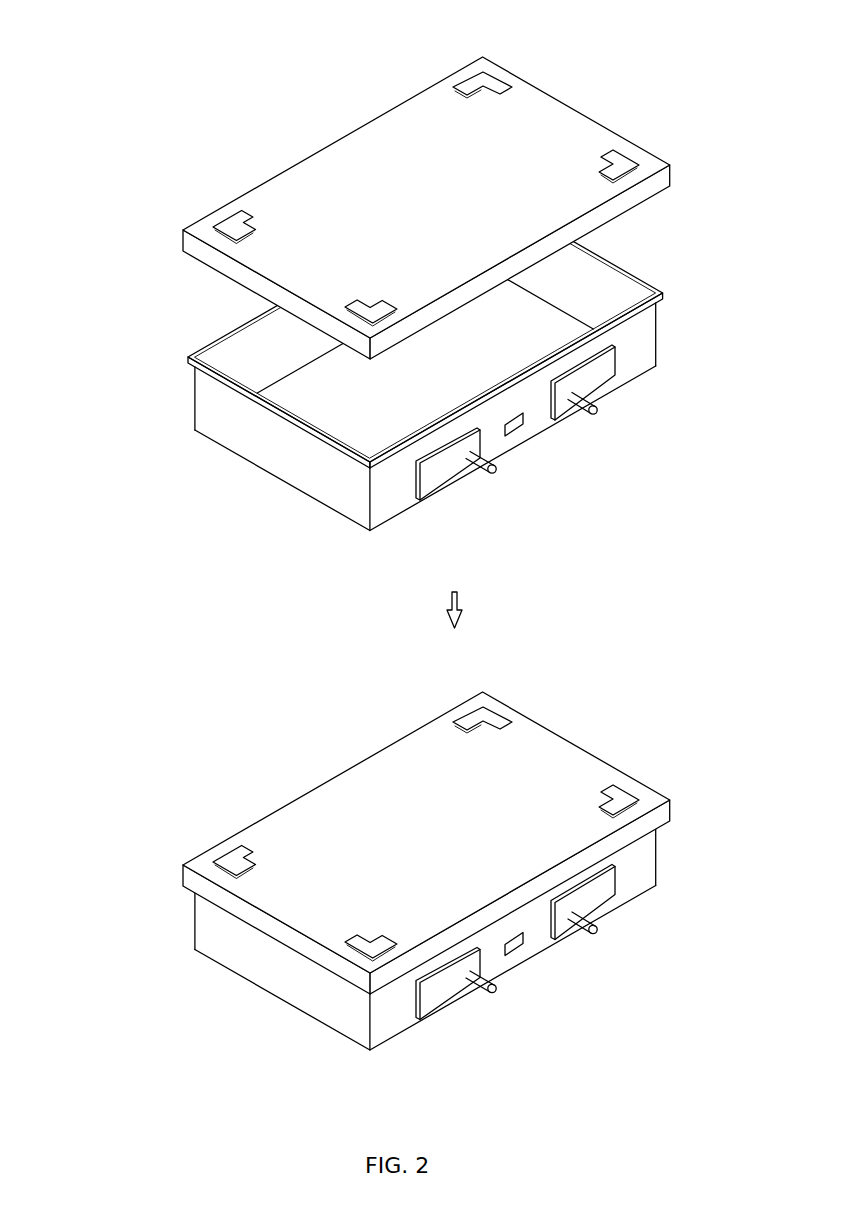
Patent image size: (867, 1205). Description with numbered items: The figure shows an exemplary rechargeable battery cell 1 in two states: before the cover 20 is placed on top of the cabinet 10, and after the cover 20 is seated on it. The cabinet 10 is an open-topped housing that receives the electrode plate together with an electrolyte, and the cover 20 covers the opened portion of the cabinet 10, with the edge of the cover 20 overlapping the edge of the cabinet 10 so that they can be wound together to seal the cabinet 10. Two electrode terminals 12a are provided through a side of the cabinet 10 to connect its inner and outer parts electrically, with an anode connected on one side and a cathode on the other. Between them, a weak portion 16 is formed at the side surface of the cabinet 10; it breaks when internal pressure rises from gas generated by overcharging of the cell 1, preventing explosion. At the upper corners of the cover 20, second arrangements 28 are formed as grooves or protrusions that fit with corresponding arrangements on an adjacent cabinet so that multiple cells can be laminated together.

The cell 1 is at (394, 530).
The cabinet 10 is at (296, 463).
The electrode terminal 12a is at (494, 474).
The weak portion 16 is at (520, 434).
The cover 20 is at (455, 497).
The second arrangement 28 is at (488, 85).